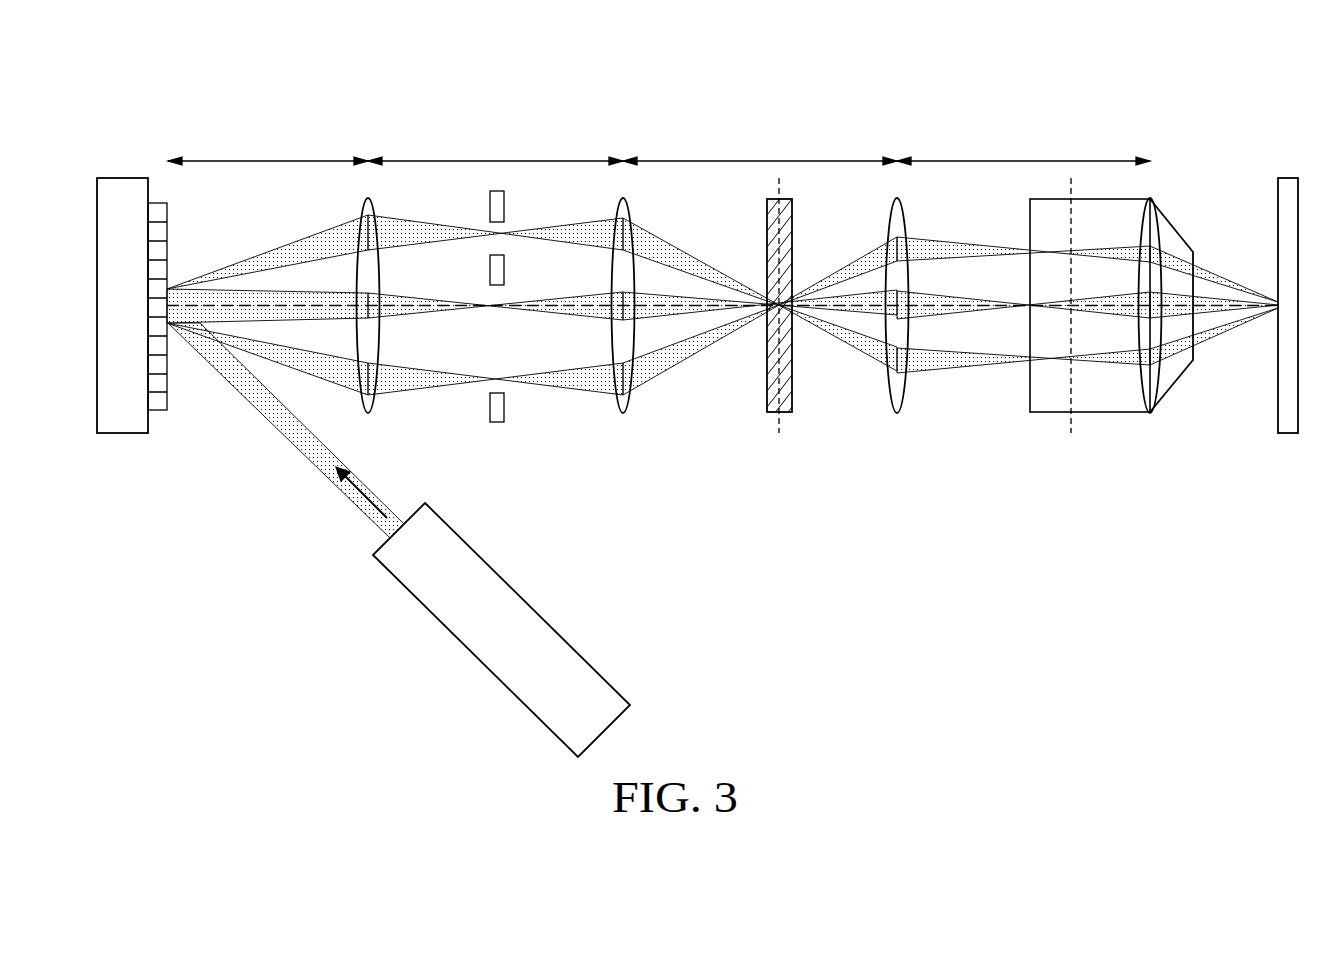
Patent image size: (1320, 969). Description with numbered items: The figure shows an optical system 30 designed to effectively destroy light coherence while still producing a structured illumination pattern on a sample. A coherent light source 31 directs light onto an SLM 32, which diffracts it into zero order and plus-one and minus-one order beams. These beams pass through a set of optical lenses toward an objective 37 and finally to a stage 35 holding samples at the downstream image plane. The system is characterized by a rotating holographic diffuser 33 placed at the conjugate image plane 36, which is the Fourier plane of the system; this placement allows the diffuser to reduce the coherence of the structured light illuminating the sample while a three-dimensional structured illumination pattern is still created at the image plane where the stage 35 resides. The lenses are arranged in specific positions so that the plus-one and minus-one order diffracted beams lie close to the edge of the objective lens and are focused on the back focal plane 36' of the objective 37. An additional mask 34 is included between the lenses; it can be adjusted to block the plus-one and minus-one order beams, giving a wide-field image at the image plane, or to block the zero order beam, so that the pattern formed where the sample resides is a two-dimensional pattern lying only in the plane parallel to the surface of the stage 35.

The optical system 30 is at (114, 56).
The coherent light source 31 is at (528, 603).
The SLM 32 is at (122, 178).
The rotating holographic diffuser 33 is at (767, 382).
The mask 34 is at (497, 422).
The stage 35 is at (1288, 178).
The conjugate image plane 36 is at (812, 320).
The back focal plane 36' is at (1052, 331).
The objective 37 is at (1110, 415).